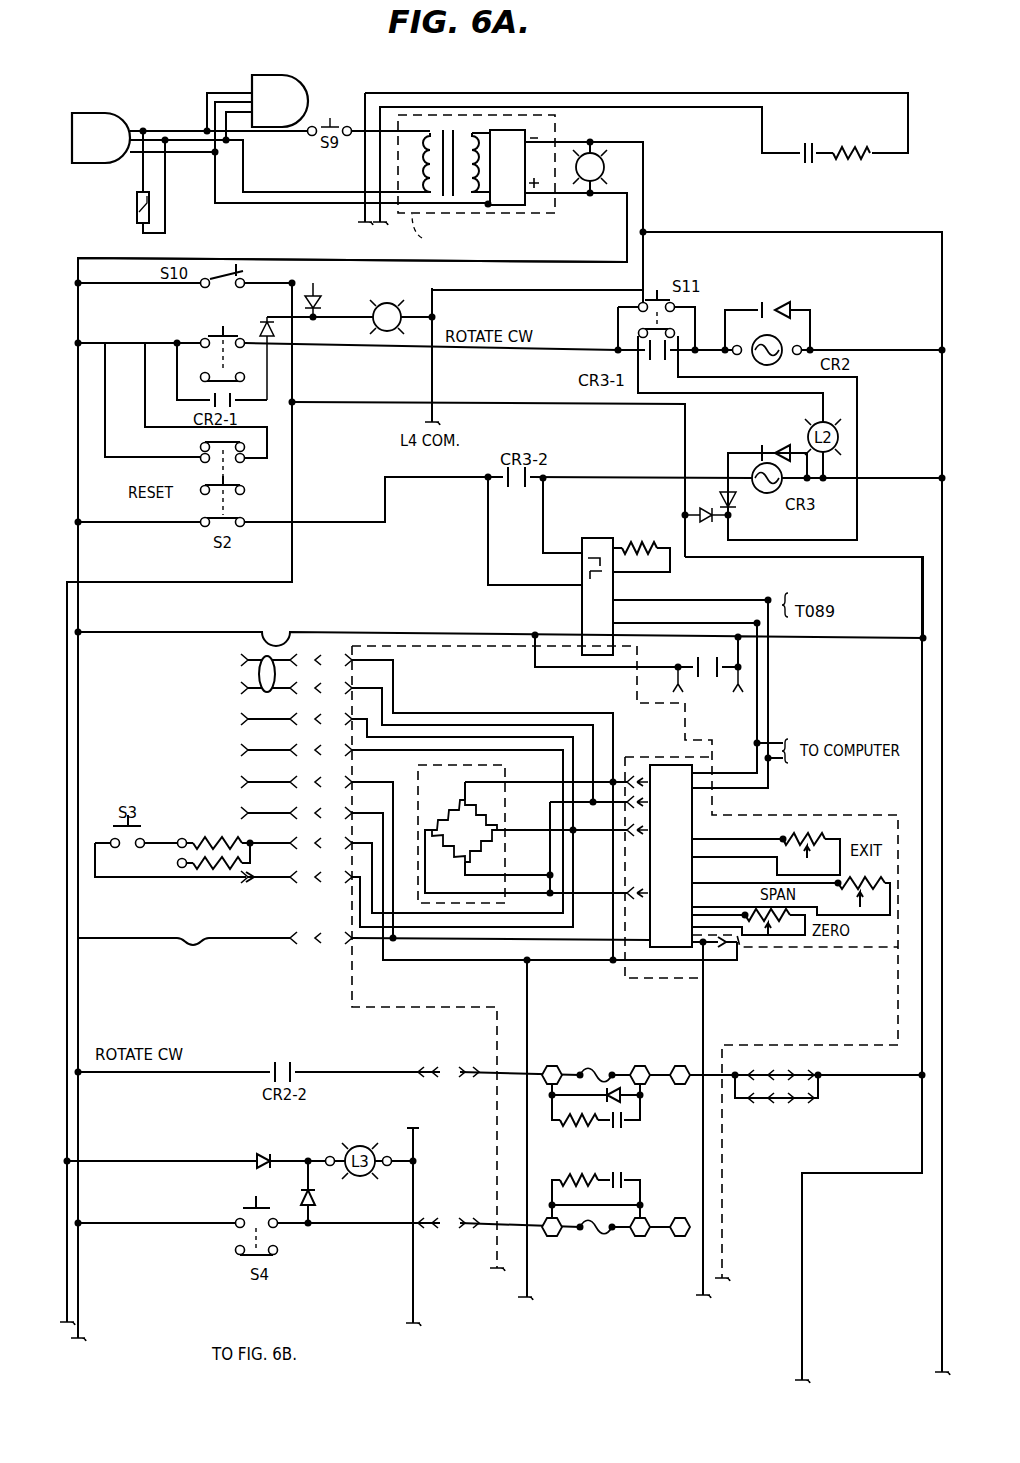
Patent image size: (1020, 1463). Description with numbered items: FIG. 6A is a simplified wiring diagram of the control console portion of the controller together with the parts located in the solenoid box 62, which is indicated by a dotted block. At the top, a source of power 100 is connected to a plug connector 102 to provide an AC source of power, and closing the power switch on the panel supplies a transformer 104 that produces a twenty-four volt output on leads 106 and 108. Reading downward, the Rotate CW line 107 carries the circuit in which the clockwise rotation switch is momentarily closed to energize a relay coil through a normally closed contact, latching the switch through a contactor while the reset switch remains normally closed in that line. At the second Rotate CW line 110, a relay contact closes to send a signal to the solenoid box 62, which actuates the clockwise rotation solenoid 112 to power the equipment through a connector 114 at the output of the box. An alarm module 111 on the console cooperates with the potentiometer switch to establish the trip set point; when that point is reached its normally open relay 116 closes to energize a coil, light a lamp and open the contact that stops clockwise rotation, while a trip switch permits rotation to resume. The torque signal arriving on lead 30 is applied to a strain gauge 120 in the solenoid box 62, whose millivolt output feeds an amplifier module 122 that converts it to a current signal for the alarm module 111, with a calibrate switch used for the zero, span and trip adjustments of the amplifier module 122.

The source of power 100 is at (118, 117).
The plug connector 102 is at (308, 87).
The transformer 104 is at (476, 182).
The lead 106 is at (75, 450).
The Rotate CW line 107 is at (62, 340).
The lead 108 is at (446, 377).
The second Rotate CW line 110 is at (66, 1070).
The alarm module 111 is at (600, 538).
The clockwise rotation solenoid 112 is at (592, 1072).
The connector 114 is at (778, 1105).
The NO relay 116 is at (588, 576).
The strain gauge 120 is at (418, 800).
The amplifier module 122 is at (686, 870).
The lead 30 is at (212, 736).
The solenoid box 62 is at (722, 1188).